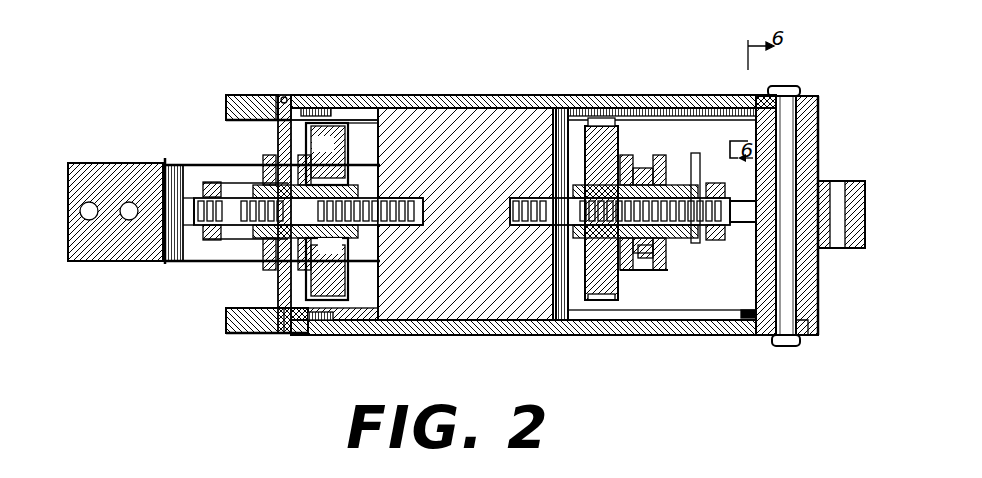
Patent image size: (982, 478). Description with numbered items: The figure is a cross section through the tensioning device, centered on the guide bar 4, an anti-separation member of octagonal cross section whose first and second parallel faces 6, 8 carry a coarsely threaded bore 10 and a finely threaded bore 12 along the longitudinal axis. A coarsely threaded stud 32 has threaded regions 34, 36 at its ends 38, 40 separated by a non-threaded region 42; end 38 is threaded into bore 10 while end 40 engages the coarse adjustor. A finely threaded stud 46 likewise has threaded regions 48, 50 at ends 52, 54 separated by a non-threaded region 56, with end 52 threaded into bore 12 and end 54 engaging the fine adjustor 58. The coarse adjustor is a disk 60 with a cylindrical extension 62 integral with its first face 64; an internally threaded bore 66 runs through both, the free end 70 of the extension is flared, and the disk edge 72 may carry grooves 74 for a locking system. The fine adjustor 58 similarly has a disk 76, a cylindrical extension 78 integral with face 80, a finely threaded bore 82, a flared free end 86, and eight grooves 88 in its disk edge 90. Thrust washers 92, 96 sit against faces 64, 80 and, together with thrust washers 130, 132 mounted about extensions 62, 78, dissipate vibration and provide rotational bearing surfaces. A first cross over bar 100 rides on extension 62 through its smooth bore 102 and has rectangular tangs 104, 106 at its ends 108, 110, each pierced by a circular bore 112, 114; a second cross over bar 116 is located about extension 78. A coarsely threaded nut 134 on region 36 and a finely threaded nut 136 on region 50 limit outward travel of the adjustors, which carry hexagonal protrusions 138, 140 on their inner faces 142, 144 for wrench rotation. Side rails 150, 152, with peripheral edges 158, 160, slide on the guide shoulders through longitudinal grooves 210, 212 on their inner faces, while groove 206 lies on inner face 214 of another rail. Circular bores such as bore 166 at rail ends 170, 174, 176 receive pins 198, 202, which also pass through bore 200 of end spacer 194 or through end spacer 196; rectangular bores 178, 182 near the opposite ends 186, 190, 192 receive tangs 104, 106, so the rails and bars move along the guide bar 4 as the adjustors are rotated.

The guide bar 4 is at (428, 112).
The first parallel face 6 is at (368, 132).
The second parallel face 8 is at (568, 150).
The coarsely threaded bore 10 is at (396, 190).
The finely threaded bore 12 is at (530, 190).
The coarsely threaded stud 32 is at (232, 232).
The threaded region 36 is at (238, 232).
The threaded region 34 is at (400, 222).
The stud end 38 is at (404, 218).
The stud end 40 is at (190, 255).
The non-threaded region 42 is at (372, 252).
The finely threaded stud 46 is at (692, 232).
The externally threaded region 48 is at (515, 222).
The externally threaded region 50 is at (830, 210).
The stud end 52 is at (518, 218).
The stud end 54 is at (832, 175).
The non-threaded region 56 is at (548, 222).
The fine adjustor 58 is at (598, 118).
The disk 60 is at (327, 154).
The cylindrical extension 62 is at (305, 211).
The first face 64 is at (276, 131).
The internally threaded bore 66 is at (308, 208).
The free end 70 is at (248, 183).
The disk edge 72 is at (318, 300).
The grooves 74 is at (345, 88).
The disk 76 is at (618, 147).
The cylindrical extension 78 is at (652, 147).
The face 80 is at (610, 150).
The finely threaded bore 82 is at (552, 160).
The free end 86 is at (685, 150).
The grooves 88 is at (585, 110).
The disk edge 90 is at (600, 293).
The first thrust washer 92 is at (327, 263).
The second thrust washer 96 is at (618, 264).
The first cross over bar 100 is at (260, 302).
The smooth bore 102 is at (260, 160).
The rectangular tang 104 is at (277, 90).
The rectangular tang 106 is at (276, 326).
The bar end 108 is at (283, 113).
The bar end 110 is at (272, 312).
The circular bore 112 is at (272, 88).
The circular bore 114 is at (282, 325).
The second cross over bar 116 is at (640, 252).
The thrust washer 130 is at (262, 262).
The thrust washer 132 is at (650, 130).
The coarsely threaded nut 134 is at (196, 256).
The finely threaded nut 136 is at (750, 205).
The hexagonal protrusion 138 is at (368, 158).
The hexagonal protrusion 140 is at (545, 272).
The inner face 142 is at (370, 286).
The inner face 144 is at (545, 297).
The side rail 150 is at (448, 328).
The side rail 152 is at (178, 255).
The peripheral edge 158 is at (510, 328).
The peripheral edge 160 is at (165, 253).
The circular bore 166 is at (790, 335).
The side rail end 170 is at (770, 98).
The side rail end 174 is at (806, 318).
The side rail end 176 is at (112, 255).
The rectangular bore 178 is at (298, 104).
The rectangular bore 182 is at (280, 330).
The side rail end 186 is at (245, 88).
The side rail end 190 is at (222, 312).
The side rail end 192 is at (722, 140).
The end spacer 194 is at (812, 138).
The end spacer 196 is at (85, 255).
The pin 198 is at (780, 78).
The bore 200 is at (806, 152).
The pin 202 is at (105, 200).
The longitudinal groove 206 is at (600, 102).
The longitudinal groove 210 is at (700, 312).
The longitudinal groove 212 is at (158, 157).
The inner face 214 is at (236, 112).